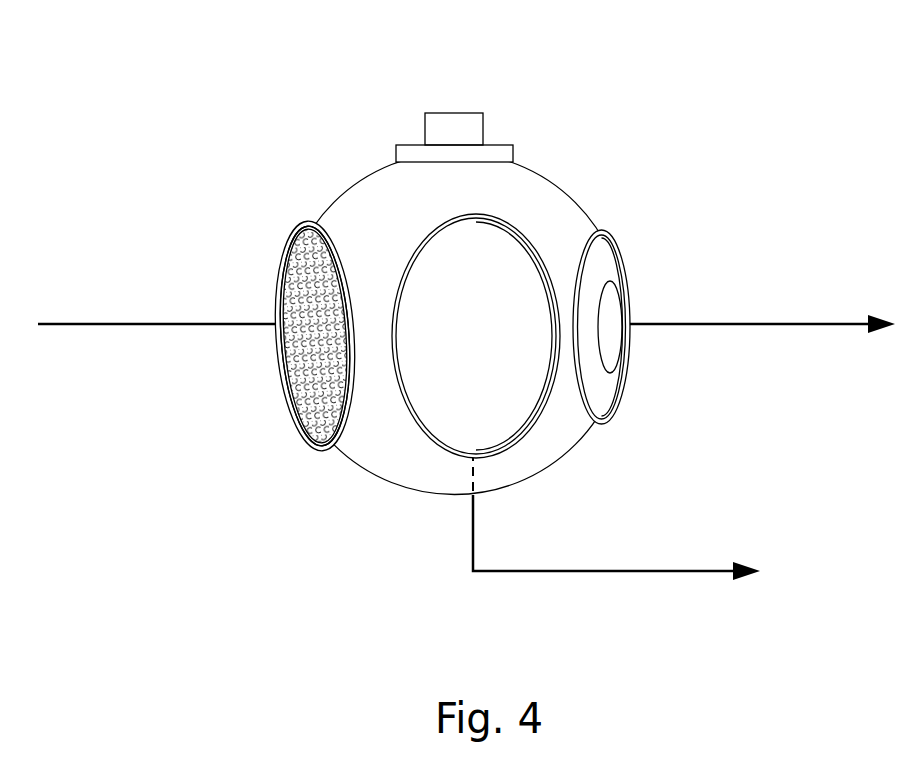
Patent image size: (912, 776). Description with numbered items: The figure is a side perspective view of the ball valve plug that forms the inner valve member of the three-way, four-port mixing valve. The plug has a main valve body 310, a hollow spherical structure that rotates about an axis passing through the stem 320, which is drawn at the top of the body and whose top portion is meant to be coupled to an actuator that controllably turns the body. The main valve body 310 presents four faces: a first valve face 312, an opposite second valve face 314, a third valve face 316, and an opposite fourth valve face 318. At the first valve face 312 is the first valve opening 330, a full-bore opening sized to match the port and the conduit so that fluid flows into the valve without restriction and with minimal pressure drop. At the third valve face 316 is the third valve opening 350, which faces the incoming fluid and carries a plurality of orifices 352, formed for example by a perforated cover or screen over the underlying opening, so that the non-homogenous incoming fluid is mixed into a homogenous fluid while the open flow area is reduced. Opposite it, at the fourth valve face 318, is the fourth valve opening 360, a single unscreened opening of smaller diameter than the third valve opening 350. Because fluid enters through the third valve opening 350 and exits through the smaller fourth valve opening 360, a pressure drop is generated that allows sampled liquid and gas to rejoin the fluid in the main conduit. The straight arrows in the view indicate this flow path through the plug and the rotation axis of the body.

The main valve body 310 is at (513, 152).
The first valve face 312 is at (440, 495).
The second valve face 314 is at (377, 168).
The third valve face 316 is at (353, 450).
The fourth valve face 318 is at (590, 215).
The stem 320 is at (473, 112).
The first valve opening 330 is at (457, 273).
The third valve opening 350 is at (296, 368).
The plurality of orifices 352 is at (315, 272).
The fourth valve opening 360 is at (632, 353).